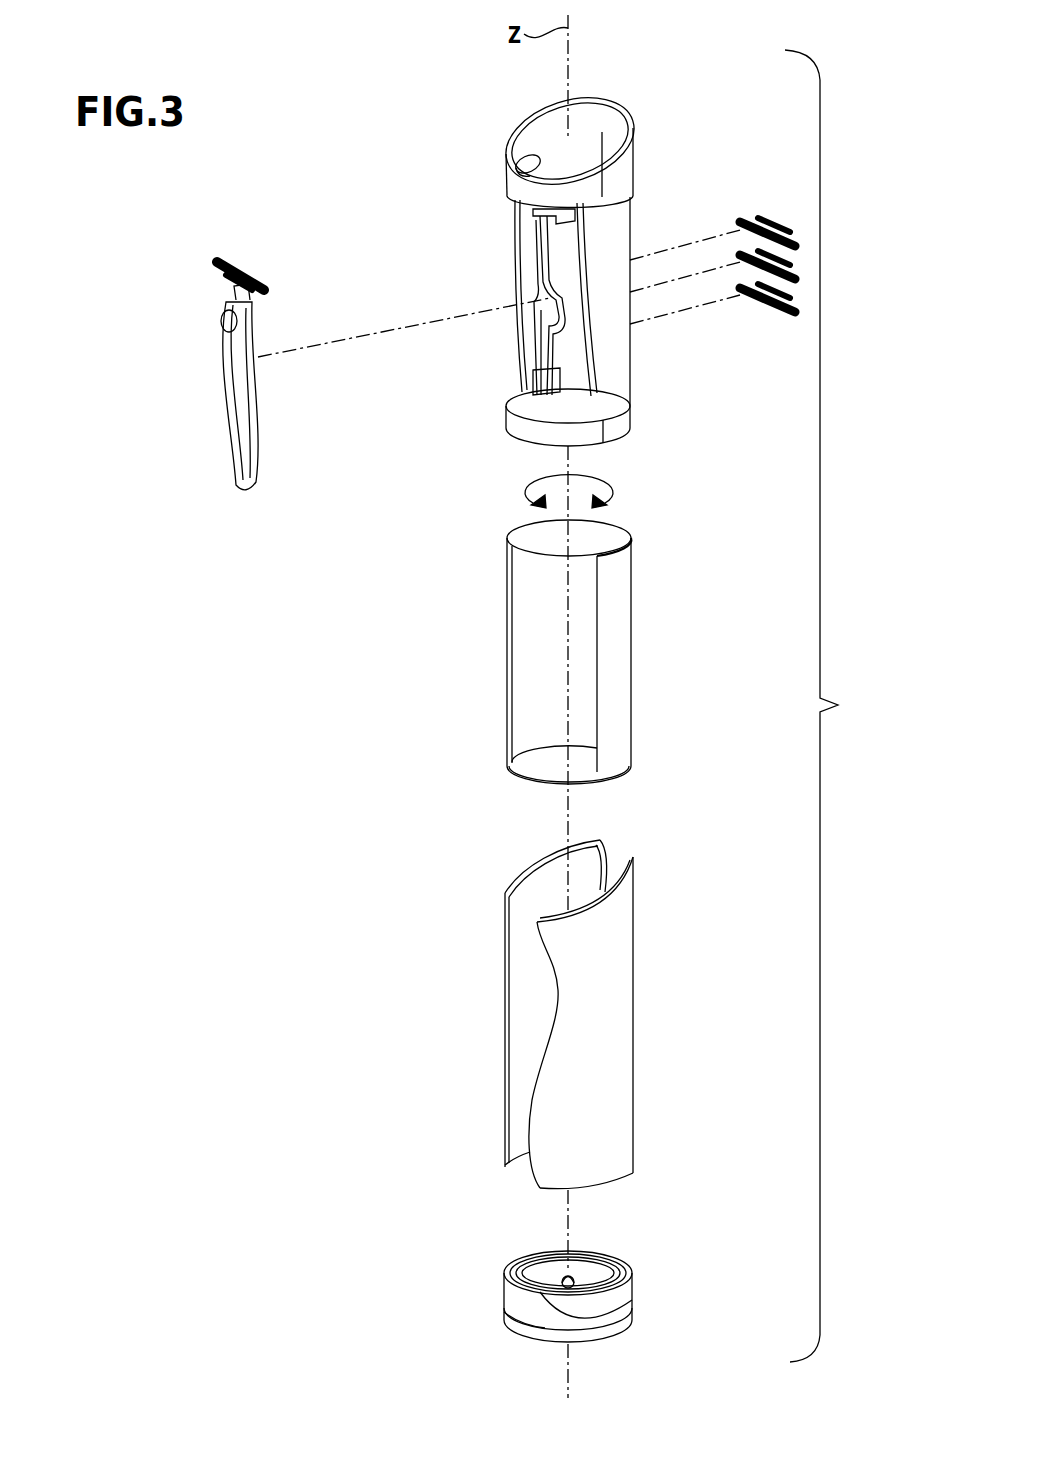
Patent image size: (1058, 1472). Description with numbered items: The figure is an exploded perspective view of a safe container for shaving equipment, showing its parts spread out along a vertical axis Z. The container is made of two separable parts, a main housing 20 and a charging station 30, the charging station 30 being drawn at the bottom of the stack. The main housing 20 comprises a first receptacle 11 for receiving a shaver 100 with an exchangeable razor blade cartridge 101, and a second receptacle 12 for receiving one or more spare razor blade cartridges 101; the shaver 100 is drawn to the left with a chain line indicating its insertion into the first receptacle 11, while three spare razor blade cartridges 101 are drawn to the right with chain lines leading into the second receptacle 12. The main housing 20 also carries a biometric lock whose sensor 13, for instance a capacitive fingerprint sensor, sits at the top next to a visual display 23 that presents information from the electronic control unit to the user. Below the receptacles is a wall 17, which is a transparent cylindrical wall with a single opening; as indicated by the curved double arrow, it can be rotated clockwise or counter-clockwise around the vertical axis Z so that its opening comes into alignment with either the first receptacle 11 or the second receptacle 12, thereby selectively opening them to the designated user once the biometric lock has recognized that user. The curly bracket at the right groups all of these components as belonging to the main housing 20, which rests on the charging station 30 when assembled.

The main housing 20 is at (828, 706).
The visual display 23 is at (605, 105).
The sensor 13 is at (518, 152).
The second receptacle 12 is at (635, 352).
The first receptacle 11 is at (531, 400).
The wall 17 is at (620, 637).
The charging station 30 is at (587, 1328).
The shaver 100 is at (240, 442).
The razor blade cartridge 101 is at (250, 263).